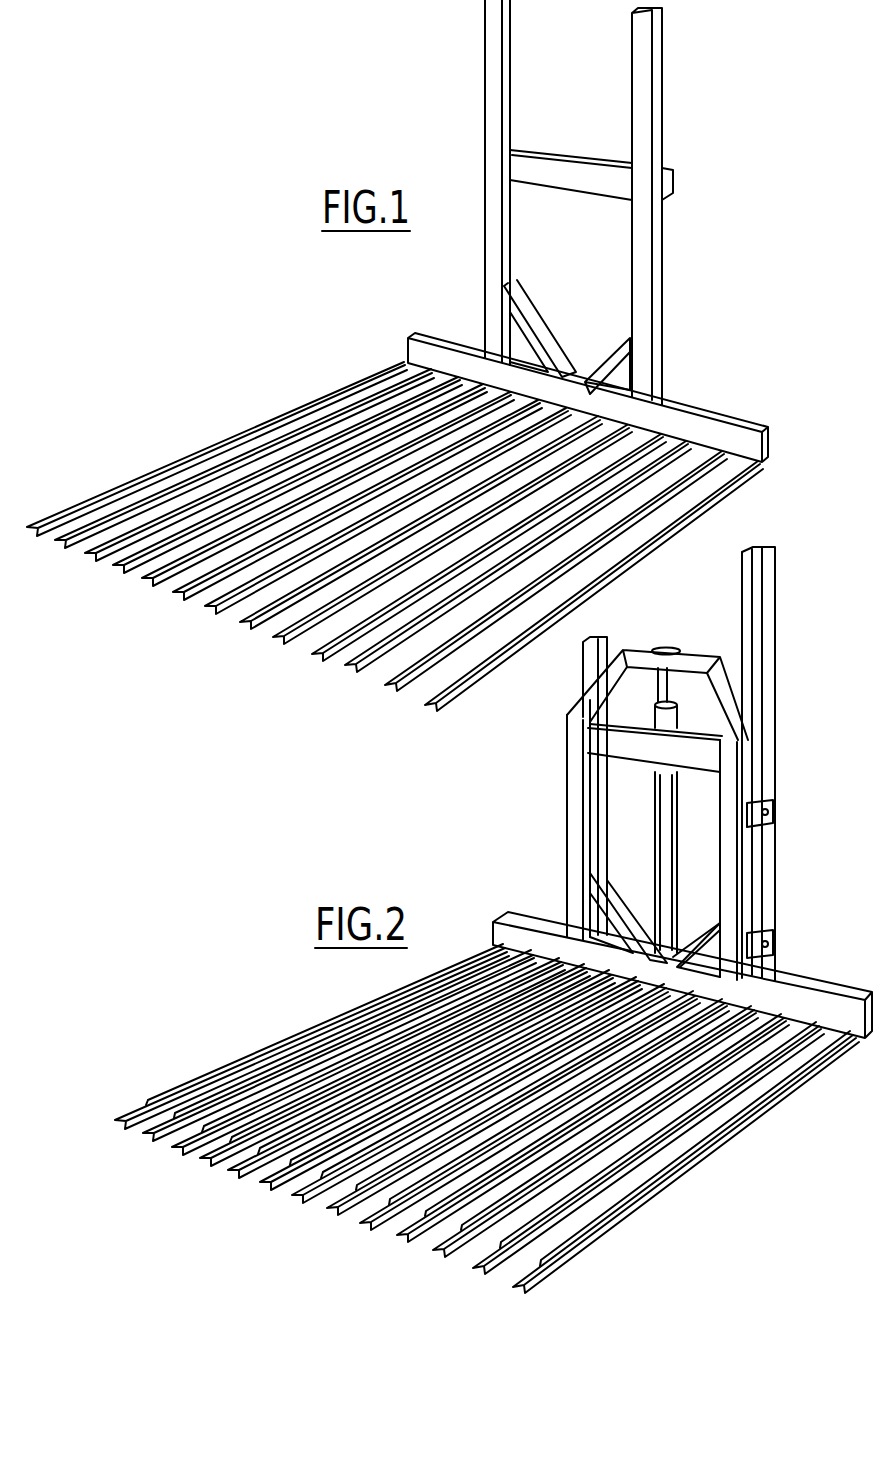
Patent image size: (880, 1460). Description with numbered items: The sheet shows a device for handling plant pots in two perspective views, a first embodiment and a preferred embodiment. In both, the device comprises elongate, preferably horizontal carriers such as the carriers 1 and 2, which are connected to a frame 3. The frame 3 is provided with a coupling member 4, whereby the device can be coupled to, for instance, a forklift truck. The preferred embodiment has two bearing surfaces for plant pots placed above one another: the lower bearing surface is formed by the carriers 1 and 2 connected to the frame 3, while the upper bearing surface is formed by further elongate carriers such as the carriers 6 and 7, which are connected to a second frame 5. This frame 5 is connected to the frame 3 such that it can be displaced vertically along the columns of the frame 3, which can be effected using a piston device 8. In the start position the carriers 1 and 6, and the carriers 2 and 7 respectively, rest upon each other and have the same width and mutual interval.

In FIG. 1, the carrier 1 is at (478, 670).
In FIG. 2, the carrier 1 is at (638, 1213).
In FIG. 1, the carrier 2 is at (403, 686).
In FIG. 2, the carrier 2 is at (511, 1260).
In FIG. 1, the frame 3 is at (646, 342).
In FIG. 2, the frame 3 is at (772, 885).
In FIG. 1, the coupling member 4 is at (560, 163).
In FIG. 2, the coupling member 4 is at (695, 765).
In FIG. 2, the frame 5 is at (730, 868).
In FIG. 2, the carrier 6 is at (617, 1218).
In FIG. 2, the carrier 7 is at (470, 1252).
In FIG. 2, the piston device 8 is at (660, 853).